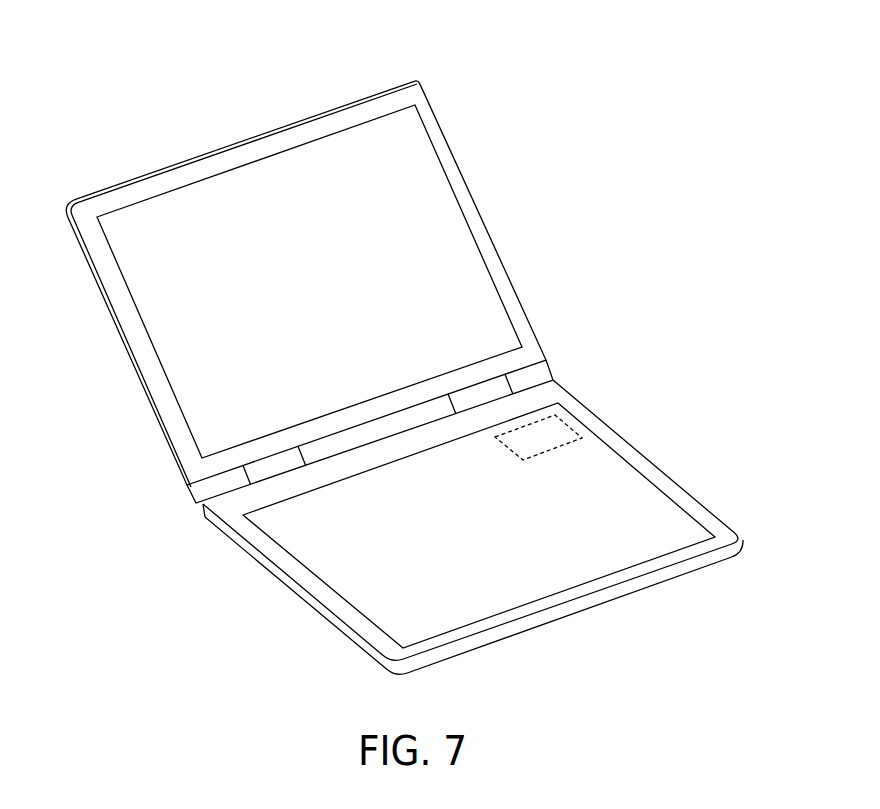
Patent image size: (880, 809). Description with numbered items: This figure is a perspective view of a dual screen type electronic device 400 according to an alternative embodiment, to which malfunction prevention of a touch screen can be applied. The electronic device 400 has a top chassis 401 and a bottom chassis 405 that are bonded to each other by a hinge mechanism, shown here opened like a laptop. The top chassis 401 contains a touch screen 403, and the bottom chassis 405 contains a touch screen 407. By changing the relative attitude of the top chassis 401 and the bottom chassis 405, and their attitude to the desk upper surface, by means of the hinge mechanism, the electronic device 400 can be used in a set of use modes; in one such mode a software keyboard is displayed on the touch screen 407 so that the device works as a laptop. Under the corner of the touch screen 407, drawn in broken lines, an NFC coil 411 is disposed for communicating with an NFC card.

The electronic device 400 is at (486, 88).
The top chassis 401 is at (474, 190).
The touch screen 403 is at (490, 322).
The bottom chassis 405 is at (637, 447).
The touch screen 407 is at (667, 525).
The NFC coil 411 is at (570, 430).